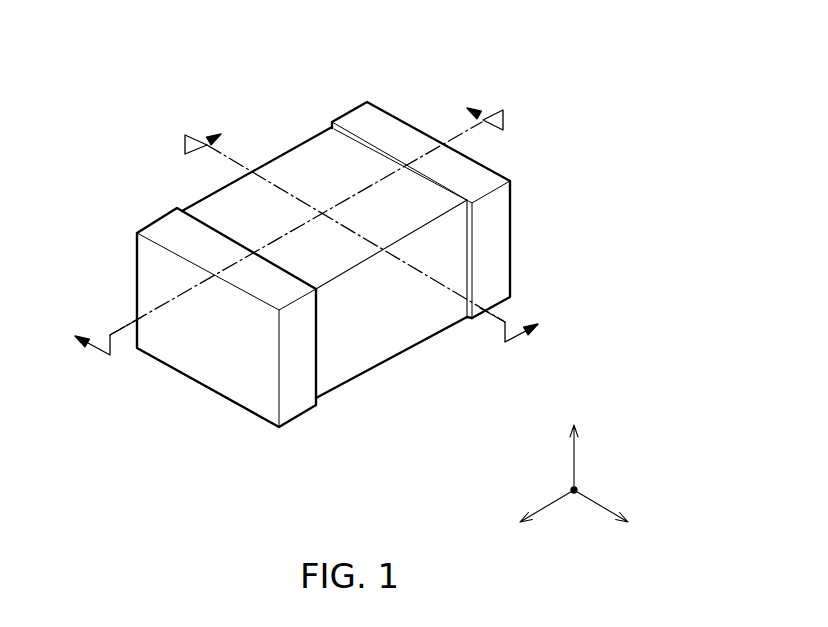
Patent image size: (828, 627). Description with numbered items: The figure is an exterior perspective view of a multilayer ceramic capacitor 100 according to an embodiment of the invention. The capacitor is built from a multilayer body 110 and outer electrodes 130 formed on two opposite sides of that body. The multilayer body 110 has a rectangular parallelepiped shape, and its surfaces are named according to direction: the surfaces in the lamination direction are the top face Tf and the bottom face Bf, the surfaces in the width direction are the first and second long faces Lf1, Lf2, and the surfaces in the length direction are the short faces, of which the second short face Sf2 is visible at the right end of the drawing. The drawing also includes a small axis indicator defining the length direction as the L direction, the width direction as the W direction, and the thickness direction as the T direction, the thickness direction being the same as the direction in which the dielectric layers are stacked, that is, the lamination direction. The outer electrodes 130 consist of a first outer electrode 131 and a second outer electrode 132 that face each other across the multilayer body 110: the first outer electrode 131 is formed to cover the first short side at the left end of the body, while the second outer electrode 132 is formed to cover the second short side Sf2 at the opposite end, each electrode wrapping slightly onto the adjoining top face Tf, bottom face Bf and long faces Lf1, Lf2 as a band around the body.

The multilayer ceramic capacitor 100 is at (180, 39).
The multilayer body 110 is at (283, 160).
The outer electrodes 130 is at (350, 289).
The first outer electrode 131 is at (297, 413).
The second outer electrode 132 is at (493, 297).
The top face Tf is at (217, 203).
The bottom face Bf is at (368, 367).
The first long face Lf1 is at (453, 250).
The second long face Lf2 is at (304, 134).
The second short face Sf2 is at (482, 165).